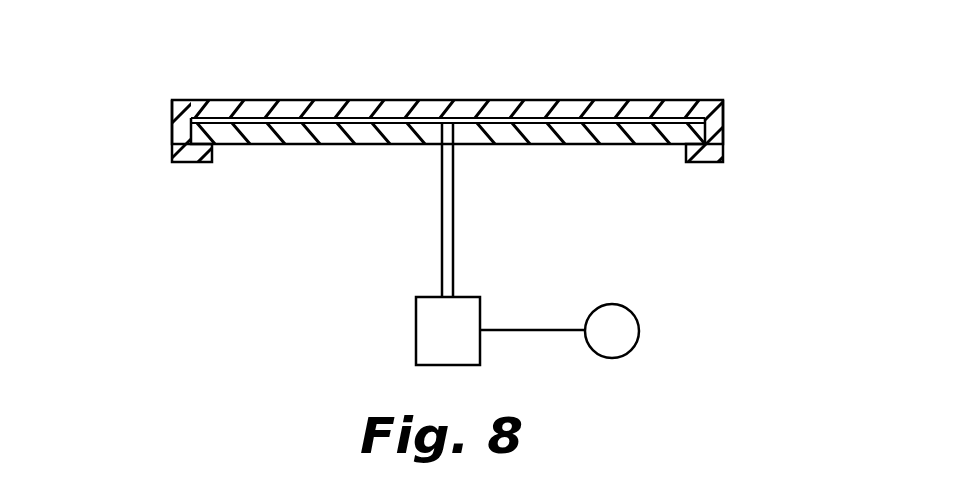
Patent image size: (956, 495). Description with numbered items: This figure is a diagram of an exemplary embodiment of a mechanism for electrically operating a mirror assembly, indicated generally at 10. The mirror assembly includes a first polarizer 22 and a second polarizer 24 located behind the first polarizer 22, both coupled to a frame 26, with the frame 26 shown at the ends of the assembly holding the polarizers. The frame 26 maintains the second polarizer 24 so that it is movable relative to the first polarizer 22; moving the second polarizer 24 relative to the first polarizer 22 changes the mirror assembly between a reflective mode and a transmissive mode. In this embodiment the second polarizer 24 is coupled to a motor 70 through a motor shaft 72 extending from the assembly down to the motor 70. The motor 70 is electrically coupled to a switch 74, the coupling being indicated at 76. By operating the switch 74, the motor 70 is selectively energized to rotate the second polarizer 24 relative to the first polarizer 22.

The apparatus 10 is at (705, 43).
The first polarizer 22 is at (522, 100).
The second polarizer 24 is at (573, 144).
The frame 26 is at (172, 130).
The motor 70 is at (416, 329).
The motor shaft 72 is at (442, 215).
The switch 74 is at (632, 313).
The electrical coupling 76 is at (531, 330).